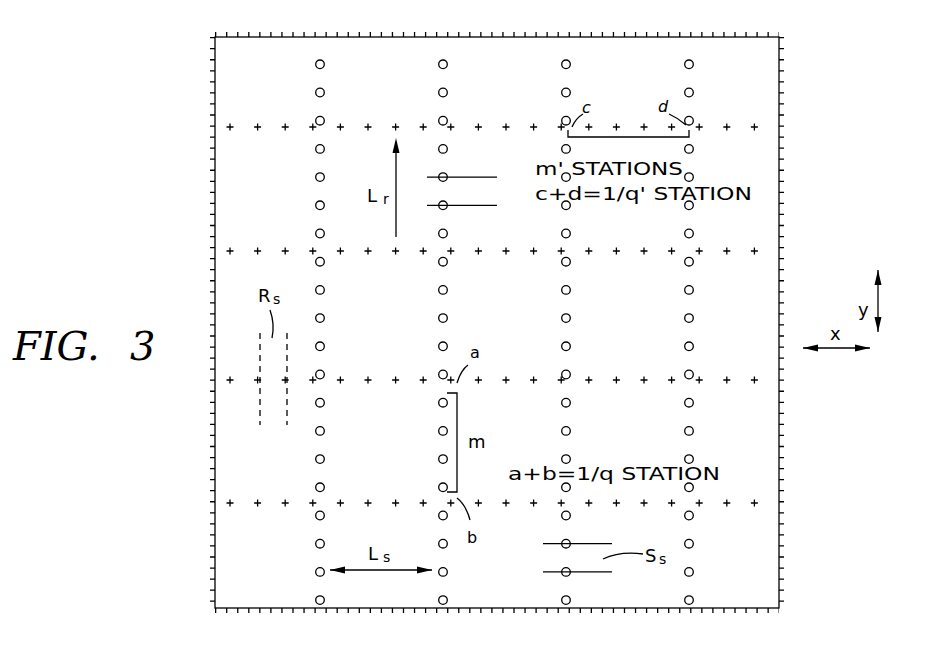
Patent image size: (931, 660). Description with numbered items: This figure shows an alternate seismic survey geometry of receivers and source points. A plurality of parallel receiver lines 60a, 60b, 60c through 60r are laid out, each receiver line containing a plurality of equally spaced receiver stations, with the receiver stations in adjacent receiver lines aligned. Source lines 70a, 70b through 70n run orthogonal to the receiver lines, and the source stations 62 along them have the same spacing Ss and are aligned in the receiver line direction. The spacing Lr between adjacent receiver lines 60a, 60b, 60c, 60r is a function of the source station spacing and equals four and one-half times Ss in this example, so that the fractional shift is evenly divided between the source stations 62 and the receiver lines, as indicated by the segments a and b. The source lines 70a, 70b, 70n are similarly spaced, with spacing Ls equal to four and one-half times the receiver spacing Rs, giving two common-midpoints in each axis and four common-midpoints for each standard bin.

The source stations 62 is at (499, 332).
The source line 70n is at (315, 77).
The source line 70b is at (562, 77).
The source line 70a is at (686, 77).
The receiver line 60a is at (712, 508).
The receiver line 60b is at (713, 380).
The receiver line 60c is at (710, 253).
The receiver line 60r is at (711, 122).